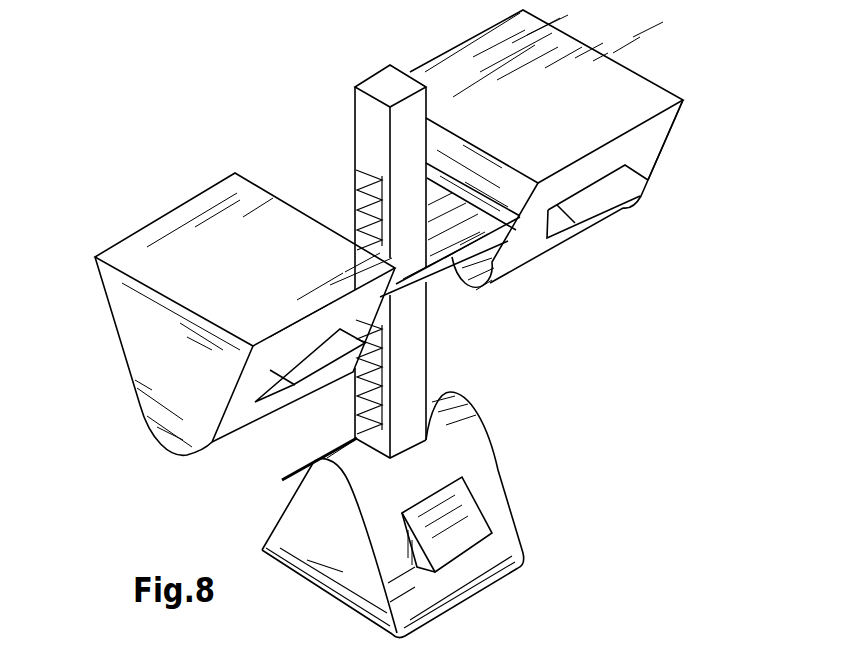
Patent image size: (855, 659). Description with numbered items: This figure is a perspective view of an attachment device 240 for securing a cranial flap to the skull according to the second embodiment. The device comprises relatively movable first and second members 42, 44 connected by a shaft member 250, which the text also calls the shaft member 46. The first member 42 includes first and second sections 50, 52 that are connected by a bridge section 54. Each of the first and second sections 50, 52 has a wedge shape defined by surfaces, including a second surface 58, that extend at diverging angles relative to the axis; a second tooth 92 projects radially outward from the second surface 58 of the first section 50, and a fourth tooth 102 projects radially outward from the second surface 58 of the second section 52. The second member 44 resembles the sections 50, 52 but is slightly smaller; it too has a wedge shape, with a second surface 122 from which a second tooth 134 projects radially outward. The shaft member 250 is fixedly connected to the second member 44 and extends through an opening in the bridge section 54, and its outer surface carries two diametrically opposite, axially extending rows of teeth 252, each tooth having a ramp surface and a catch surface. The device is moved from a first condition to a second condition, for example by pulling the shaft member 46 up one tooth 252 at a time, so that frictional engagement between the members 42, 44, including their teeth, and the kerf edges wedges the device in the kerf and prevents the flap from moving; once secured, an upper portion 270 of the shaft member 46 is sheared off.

The attachment device 240 is at (245, 99).
The shaft member 250 is at (345, 107).
The upper portion of the shaft member 270 is at (372, 155).
The teeth 252 is at (363, 397).
The shaft member 46 is at (385, 261).
The bridge section 54 is at (438, 278).
The first member 42 is at (214, 309).
The first section of the first member 50 is at (88, 298).
The second tooth 92 is at (303, 362).
The second section of the first member 52 is at (553, 150).
The fourth tooth 102 is at (603, 195).
The second surface 58 is at (237, 427).
The second member 44 is at (425, 515).
The second surface of the second member 122 is at (437, 597).
The second tooth of the second member 134 is at (463, 537).